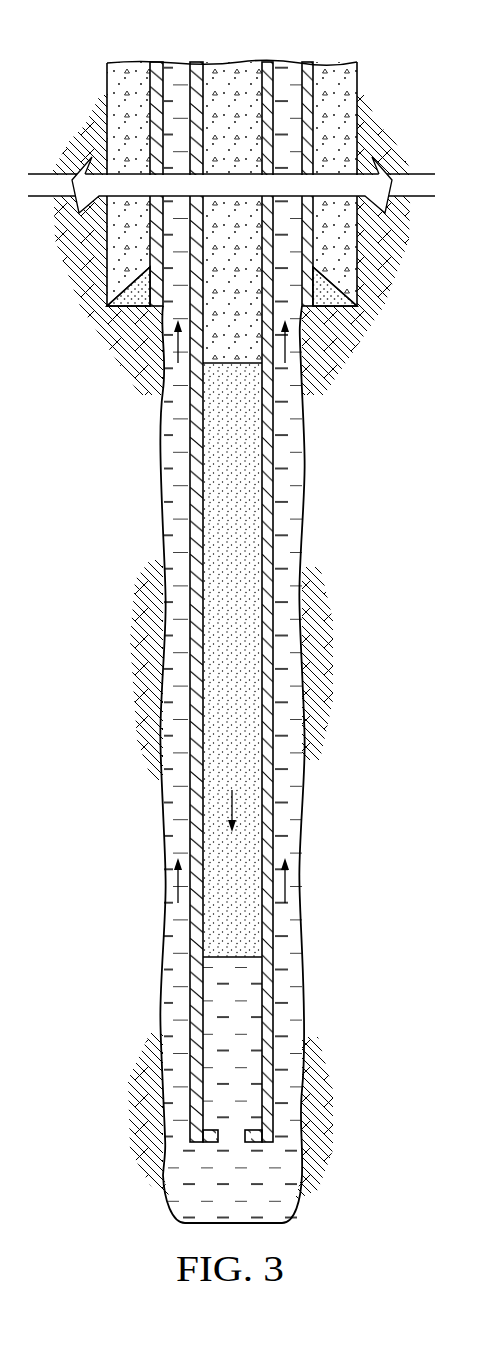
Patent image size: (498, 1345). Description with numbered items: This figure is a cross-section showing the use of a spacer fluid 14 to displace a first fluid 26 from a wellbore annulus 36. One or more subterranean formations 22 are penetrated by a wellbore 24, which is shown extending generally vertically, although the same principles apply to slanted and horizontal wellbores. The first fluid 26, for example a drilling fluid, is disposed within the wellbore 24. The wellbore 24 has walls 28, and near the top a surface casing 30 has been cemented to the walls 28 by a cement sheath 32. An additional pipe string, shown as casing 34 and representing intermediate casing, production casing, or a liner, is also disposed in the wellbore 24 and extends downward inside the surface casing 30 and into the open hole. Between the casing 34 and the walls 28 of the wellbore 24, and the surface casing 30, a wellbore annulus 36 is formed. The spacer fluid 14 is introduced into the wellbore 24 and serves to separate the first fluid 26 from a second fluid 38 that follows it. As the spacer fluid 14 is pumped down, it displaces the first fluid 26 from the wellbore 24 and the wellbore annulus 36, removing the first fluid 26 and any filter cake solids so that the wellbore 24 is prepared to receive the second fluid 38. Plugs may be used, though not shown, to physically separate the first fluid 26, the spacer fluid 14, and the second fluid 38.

The spacer fluid 14 is at (254, 502).
The subterranean formations 22 is at (100, 685).
The wellbore 24 is at (310, 455).
The first fluid 26 is at (163, 927).
The walls 28 is at (112, 292).
The surface casing 30 is at (149, 72).
The cement sheath 32 is at (112, 248).
The casing 34 is at (180, 966).
The wellbore annulus 36 is at (163, 820).
The second fluid 38 is at (233, 68).